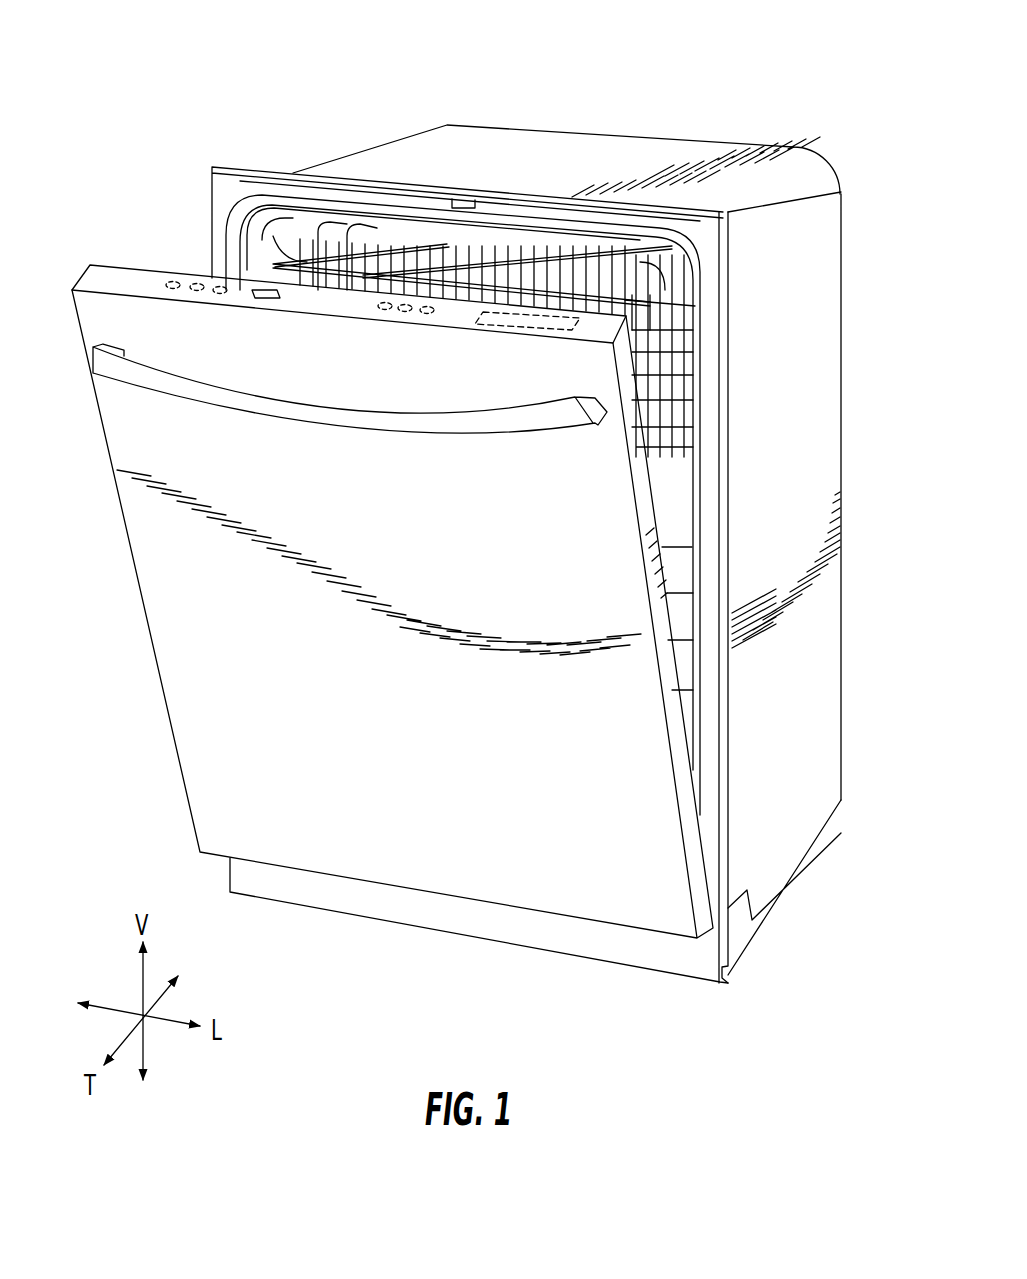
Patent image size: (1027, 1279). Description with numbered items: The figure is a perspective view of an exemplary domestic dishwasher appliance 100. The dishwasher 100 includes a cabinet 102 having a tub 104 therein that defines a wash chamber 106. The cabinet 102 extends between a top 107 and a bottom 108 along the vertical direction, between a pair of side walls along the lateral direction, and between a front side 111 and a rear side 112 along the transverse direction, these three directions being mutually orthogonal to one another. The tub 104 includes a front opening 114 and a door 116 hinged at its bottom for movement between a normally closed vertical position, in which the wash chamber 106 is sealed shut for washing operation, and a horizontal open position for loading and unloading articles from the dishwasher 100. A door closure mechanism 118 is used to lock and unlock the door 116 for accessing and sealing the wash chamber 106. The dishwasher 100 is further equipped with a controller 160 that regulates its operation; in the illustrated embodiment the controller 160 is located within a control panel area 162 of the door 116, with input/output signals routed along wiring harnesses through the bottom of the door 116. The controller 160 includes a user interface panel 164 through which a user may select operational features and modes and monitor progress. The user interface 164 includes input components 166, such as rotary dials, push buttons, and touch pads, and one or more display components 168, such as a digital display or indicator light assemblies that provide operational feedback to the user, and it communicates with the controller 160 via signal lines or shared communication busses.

The dishwasher appliance 100 is at (462, 109).
The cabinet 102 is at (526, 449).
The tub 104 is at (463, 464).
The wash chamber 106 is at (472, 196).
The top 107 is at (246, 230).
The bottom 108 is at (818, 887).
The front side 111 is at (479, 950).
The rear side 112 is at (806, 597).
The front opening 114 is at (632, 267).
The door 116 is at (392, 614).
The door closure mechanism 118 is at (450, 134).
The controller 160 is at (527, 340).
The control panel area 162 is at (338, 274).
The user interface panel 164 is at (412, 346).
The input components 166 is at (180, 314).
The display components 168 is at (288, 329).